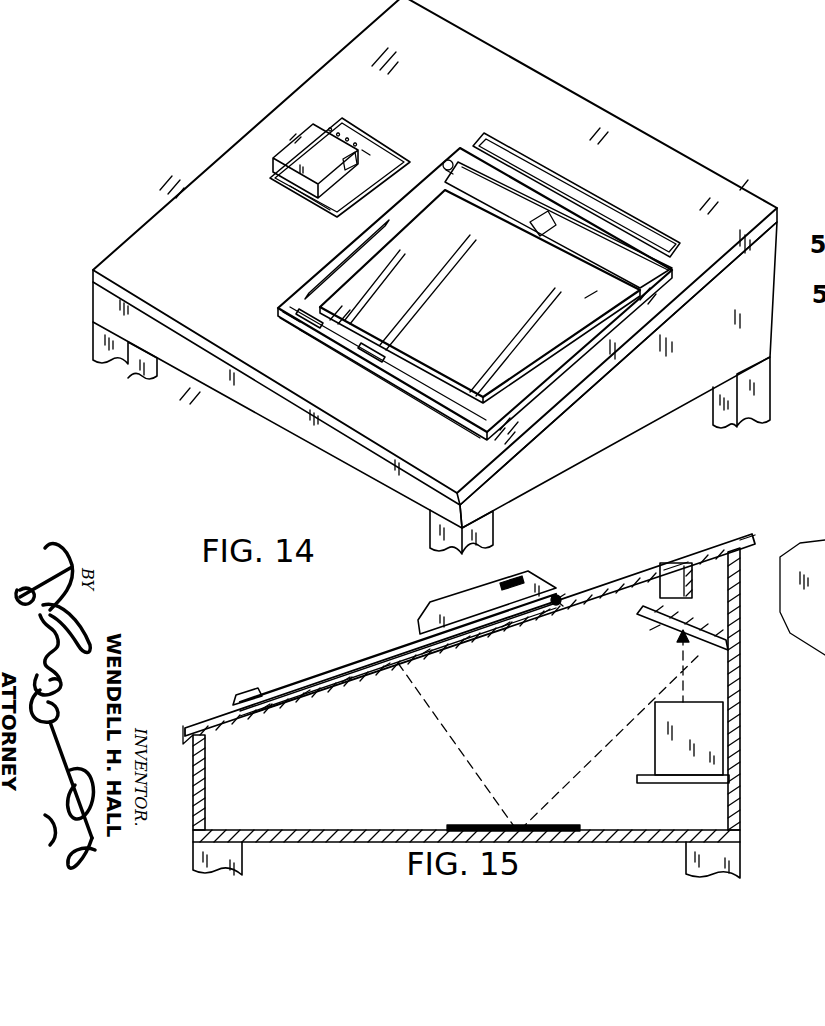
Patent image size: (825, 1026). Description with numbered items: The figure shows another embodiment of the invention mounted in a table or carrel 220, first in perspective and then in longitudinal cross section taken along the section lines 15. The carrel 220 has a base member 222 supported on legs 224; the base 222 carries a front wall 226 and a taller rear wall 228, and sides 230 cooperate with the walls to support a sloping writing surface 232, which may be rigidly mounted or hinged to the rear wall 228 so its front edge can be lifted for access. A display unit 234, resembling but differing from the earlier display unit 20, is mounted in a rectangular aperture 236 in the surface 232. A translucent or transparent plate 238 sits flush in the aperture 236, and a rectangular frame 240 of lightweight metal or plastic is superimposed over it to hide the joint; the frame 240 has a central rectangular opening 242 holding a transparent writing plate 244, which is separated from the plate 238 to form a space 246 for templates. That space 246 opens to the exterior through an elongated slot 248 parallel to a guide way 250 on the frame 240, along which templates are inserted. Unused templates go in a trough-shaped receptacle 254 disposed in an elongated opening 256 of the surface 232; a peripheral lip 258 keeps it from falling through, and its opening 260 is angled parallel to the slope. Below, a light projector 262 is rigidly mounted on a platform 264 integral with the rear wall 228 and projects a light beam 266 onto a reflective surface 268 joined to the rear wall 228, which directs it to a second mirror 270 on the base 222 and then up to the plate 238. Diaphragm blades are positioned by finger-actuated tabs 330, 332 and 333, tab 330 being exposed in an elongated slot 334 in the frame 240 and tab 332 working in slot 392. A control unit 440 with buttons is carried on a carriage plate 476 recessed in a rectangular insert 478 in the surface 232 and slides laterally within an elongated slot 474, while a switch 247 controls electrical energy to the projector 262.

In FIG. 14, the section lines 15 is at (673, 147).
In FIG. 14, the display unit 20 is at (355, 275).
In FIG. 14, the carrel 220 is at (258, 428).
In FIG. 15, the base member 222 is at (268, 834).
In FIG. 14, the legs 224 is at (110, 350).
In FIG. 15, the legs 224 is at (233, 858).
In FIG. 14, the front wall 226 is at (410, 487).
In FIG. 15, the front wall 226 is at (205, 790).
In FIG. 15, the rear wall 228 is at (733, 777).
In FIG. 14, the sides 230 is at (645, 411).
In FIG. 14, the writing surface 232 is at (192, 256).
In FIG. 15, the writing surface 232 is at (585, 603).
In FIG. 14, the display unit 234 is at (325, 345).
In FIG. 15, the display unit 234 is at (339, 688).
In FIG. 15, the rectangular aperture 236 is at (553, 605).
In FIG. 15, the translucent or transparent plate 238 is at (380, 668).
In FIG. 14, the rectangular frame 240 is at (468, 403).
In FIG. 15, the rectangular frame 240 is at (236, 702).
In FIG. 14, the rectangular opening 242 is at (597, 293).
In FIG. 14, the transparent writing plate 244 is at (437, 353).
In FIG. 15, the transparent writing plate 244 is at (337, 666).
In FIG. 15, the space 246 is at (393, 646).
In FIG. 14, the switch 247 is at (455, 160).
In FIG. 15, the elongated slot 248 is at (557, 592).
In FIG. 14, the guide way 250 is at (636, 263).
In FIG. 14, the receptacle 254 is at (577, 200).
In FIG. 15, the receptacle 254 is at (748, 550).
In FIG. 15, the elongated opening 256 is at (643, 604).
In FIG. 14, the peripheral lip 258 is at (508, 147).
In FIG. 15, the peripheral lip 258 is at (695, 550).
In FIG. 15, the opening 260 is at (660, 552).
In FIG. 15, the light projector 262 is at (713, 738).
In FIG. 15, the platform 264 is at (693, 778).
In FIG. 15, the light beam 266 is at (685, 663).
In FIG. 15, the reflective surface 268 is at (657, 633).
In FIG. 15, the mirror 270 is at (477, 828).
In FIG. 14, the tab 330 is at (300, 306).
In FIG. 14, the tab 332 is at (300, 318).
In FIG. 14, the tab 333 is at (372, 356).
In FIG. 14, the elongated slot 334 is at (333, 297).
In FIG. 14, the slot 392 is at (278, 310).
In FIG. 14, the control unit 440 is at (270, 161).
In FIG. 14, the elongated slot 474 is at (448, 158).
In FIG. 14, the carriage plate 476 is at (337, 202).
In FIG. 14, the rectangular insert 478 is at (366, 148).